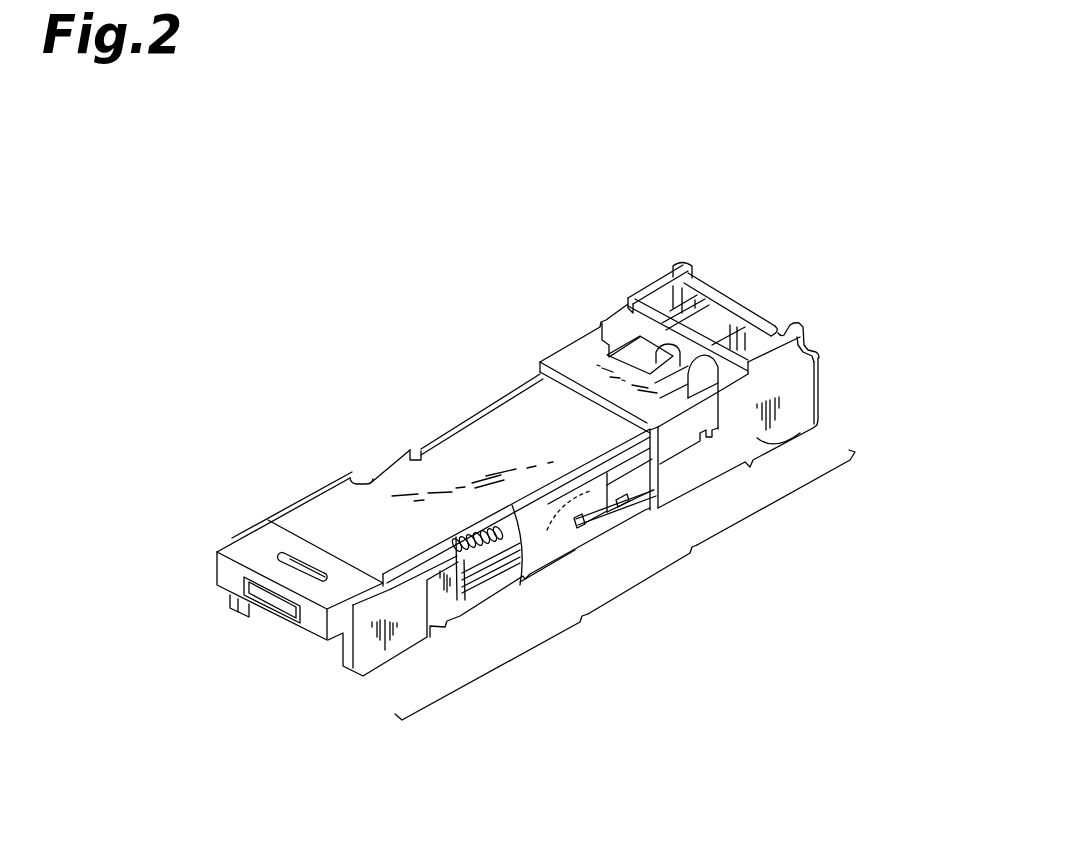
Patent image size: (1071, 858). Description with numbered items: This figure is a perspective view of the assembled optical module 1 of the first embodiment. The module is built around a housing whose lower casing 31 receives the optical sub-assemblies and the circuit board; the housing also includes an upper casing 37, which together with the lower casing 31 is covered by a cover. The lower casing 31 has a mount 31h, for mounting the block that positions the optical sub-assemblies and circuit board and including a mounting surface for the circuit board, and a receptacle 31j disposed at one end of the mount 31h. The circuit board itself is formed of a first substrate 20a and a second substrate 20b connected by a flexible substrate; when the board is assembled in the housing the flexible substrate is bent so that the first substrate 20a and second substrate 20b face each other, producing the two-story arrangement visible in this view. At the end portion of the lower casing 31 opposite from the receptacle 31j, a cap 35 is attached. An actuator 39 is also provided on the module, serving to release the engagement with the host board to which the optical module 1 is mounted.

The optical module 1 is at (519, 288).
The first substrate 20a is at (470, 563).
The second substrate 20b is at (443, 452).
The lower casing 31 is at (820, 427).
The mount 31h is at (641, 603).
The receptacle 31j is at (776, 506).
The cap 35 is at (237, 576).
The upper casing 37 is at (578, 514).
The actuator 39 is at (820, 387).